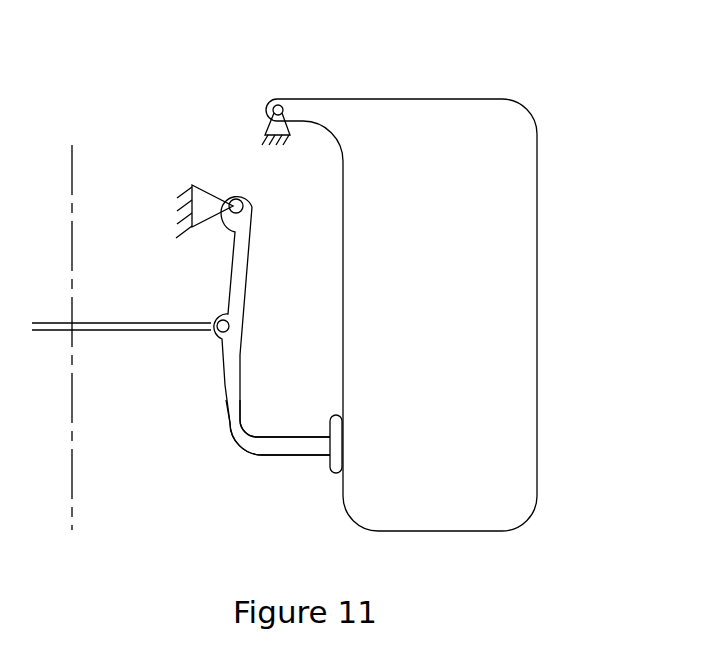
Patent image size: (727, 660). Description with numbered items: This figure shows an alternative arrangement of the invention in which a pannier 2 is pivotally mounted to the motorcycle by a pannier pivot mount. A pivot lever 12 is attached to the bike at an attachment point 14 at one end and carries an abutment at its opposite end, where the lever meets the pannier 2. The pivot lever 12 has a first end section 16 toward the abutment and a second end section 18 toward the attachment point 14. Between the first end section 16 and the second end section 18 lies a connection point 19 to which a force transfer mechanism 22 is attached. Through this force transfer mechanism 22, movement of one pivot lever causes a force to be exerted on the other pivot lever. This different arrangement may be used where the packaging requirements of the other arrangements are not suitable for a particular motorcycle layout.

The pannier 2 is at (538, 317).
The pivot lever 12 is at (268, 280).
The attachment point 14 is at (238, 190).
The first end section 16 is at (227, 435).
The second end section 18 is at (245, 232).
The connection point 19 is at (238, 323).
The force transfer mechanism 22 is at (127, 322).